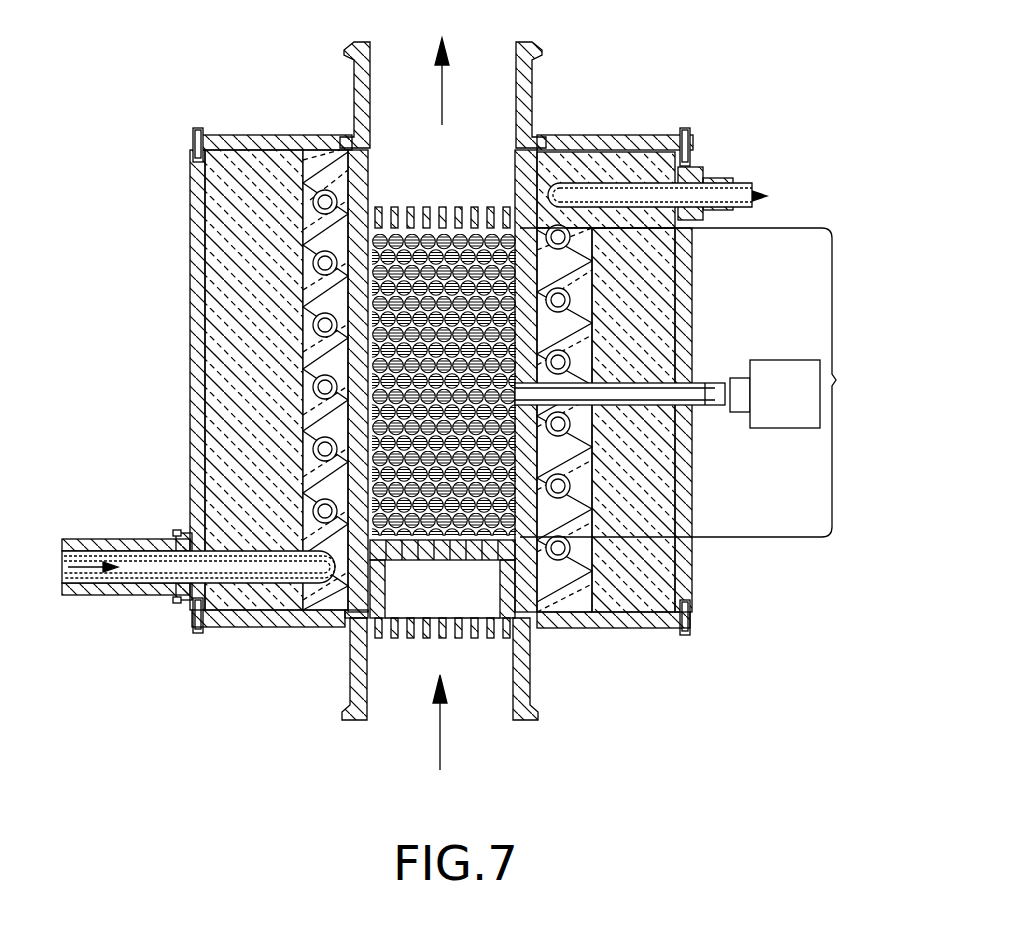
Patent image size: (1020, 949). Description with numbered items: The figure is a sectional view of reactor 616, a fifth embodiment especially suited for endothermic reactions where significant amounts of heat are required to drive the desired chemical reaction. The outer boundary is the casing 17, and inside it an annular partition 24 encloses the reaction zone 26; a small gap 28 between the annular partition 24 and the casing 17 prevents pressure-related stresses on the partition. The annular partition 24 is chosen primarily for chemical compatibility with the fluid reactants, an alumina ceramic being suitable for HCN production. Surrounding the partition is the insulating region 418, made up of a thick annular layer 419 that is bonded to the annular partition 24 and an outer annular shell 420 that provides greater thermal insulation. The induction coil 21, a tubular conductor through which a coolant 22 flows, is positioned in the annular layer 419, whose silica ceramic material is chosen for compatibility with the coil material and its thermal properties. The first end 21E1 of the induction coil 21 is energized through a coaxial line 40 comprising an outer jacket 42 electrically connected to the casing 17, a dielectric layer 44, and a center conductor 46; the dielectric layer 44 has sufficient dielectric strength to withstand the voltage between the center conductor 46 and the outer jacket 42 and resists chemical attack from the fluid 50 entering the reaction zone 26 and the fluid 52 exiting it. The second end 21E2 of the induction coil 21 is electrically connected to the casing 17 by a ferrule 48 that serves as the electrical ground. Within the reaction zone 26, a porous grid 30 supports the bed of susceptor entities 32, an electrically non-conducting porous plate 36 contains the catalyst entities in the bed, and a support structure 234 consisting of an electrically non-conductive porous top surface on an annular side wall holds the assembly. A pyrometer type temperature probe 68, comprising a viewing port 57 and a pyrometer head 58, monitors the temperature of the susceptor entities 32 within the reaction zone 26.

The reactor 616 is at (170, 52).
The casing 17 is at (199, 198).
The second annular shell 420 is at (237, 225).
The induction coil 21 is at (303, 347).
The first end of induction coil 21E1 is at (198, 589).
The second end of induction coil 21E2 is at (630, 185).
The annular partition 24 is at (527, 170).
The insulating region 418 is at (345, 131).
The annular layer 419 is at (323, 122).
The electrically non-conducting porous plate 36 is at (428, 208).
The susceptor entities 32 is at (448, 224).
The porous grid 30 is at (428, 637).
The gap 28 is at (347, 620).
The support structure 234 is at (532, 630).
The fluid exiting reaction zone 52 is at (441, 100).
The fluid entering reaction zone 50 is at (441, 735).
The coaxial line 40 is at (180, 594).
The center conductor 46 is at (122, 596).
The dielectric layer 44 is at (140, 583).
The outer jacket 42 is at (158, 578).
The coolant 22 is at (97, 557).
The ferrule 48 is at (715, 178).
The viewing port 57 is at (663, 380).
The pyrometer head 58 is at (802, 409).
The reaction zone 26 is at (699, 382).
The pyrometer type temperature probe 68 is at (712, 430).